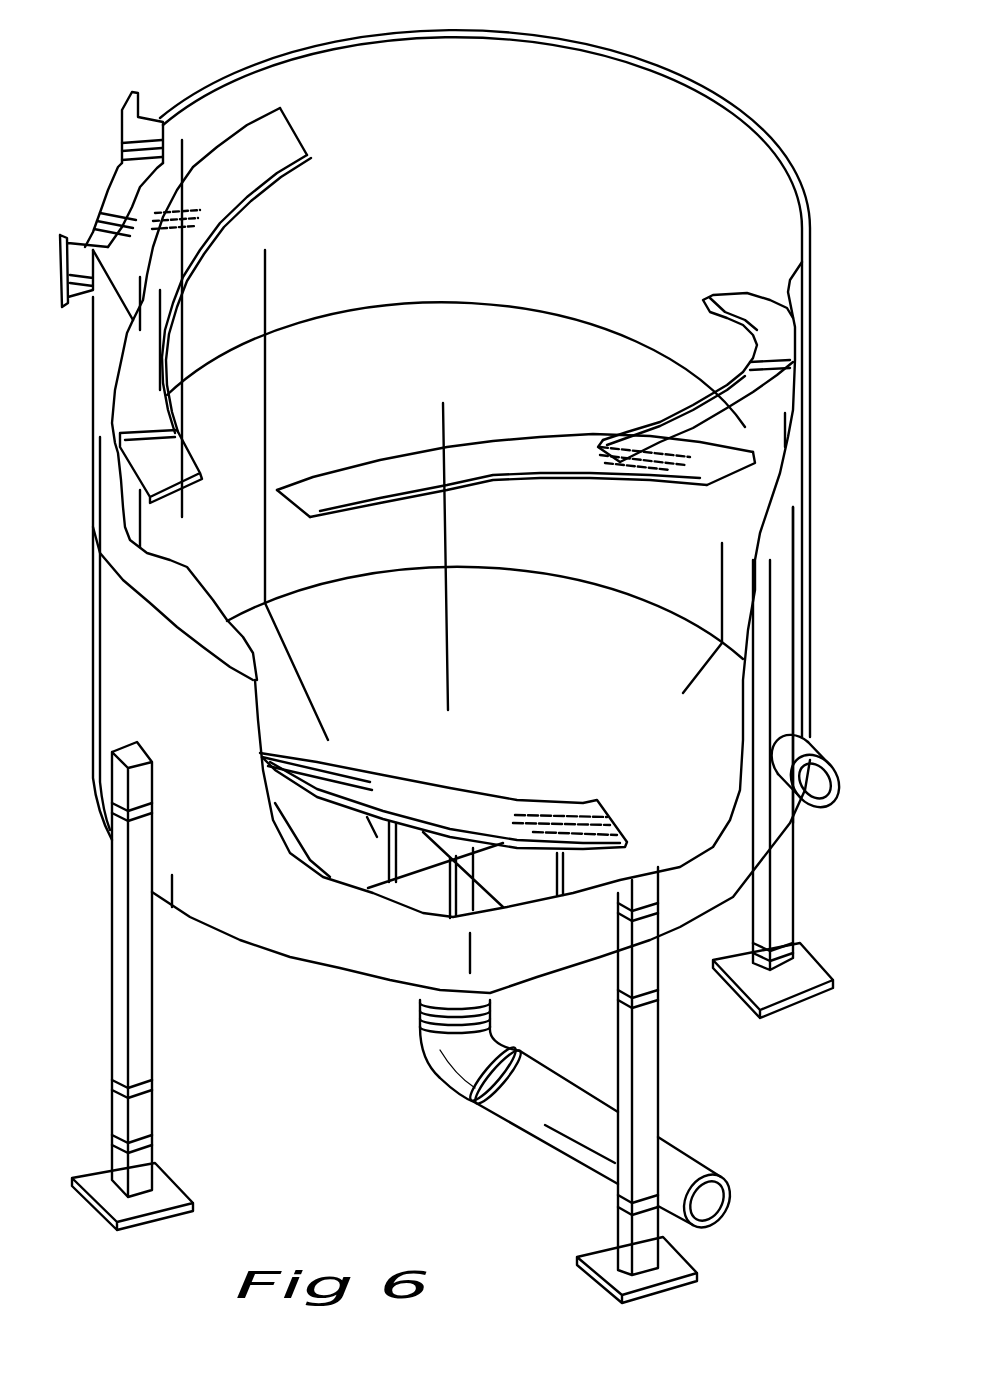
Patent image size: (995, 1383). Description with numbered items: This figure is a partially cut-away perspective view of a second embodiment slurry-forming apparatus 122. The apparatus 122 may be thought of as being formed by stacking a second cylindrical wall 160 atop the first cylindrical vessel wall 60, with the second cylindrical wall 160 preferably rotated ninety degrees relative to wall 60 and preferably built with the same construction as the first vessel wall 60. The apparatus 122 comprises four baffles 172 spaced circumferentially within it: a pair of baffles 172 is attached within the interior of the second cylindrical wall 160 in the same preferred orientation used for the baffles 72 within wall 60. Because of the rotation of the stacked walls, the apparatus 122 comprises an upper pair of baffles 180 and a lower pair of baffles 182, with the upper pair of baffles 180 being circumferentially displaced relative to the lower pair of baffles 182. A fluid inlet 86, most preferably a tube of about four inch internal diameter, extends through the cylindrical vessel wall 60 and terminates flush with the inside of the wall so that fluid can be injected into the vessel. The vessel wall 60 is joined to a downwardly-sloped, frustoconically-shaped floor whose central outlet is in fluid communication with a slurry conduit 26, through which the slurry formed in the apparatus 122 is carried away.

The slurry-forming apparatus 122 is at (684, 34).
The second cylindrical wall 160 is at (810, 434).
The cylindrical vessel wall 60 is at (812, 668).
The upper pair of baffles 180 is at (277, 138).
The baffles 172 is at (193, 203).
The baffles 72 is at (405, 460).
The lower pair of baffles 182 is at (500, 452).
The fluid inlet 86 is at (837, 757).
The slurry conduit 26 is at (687, 1170).